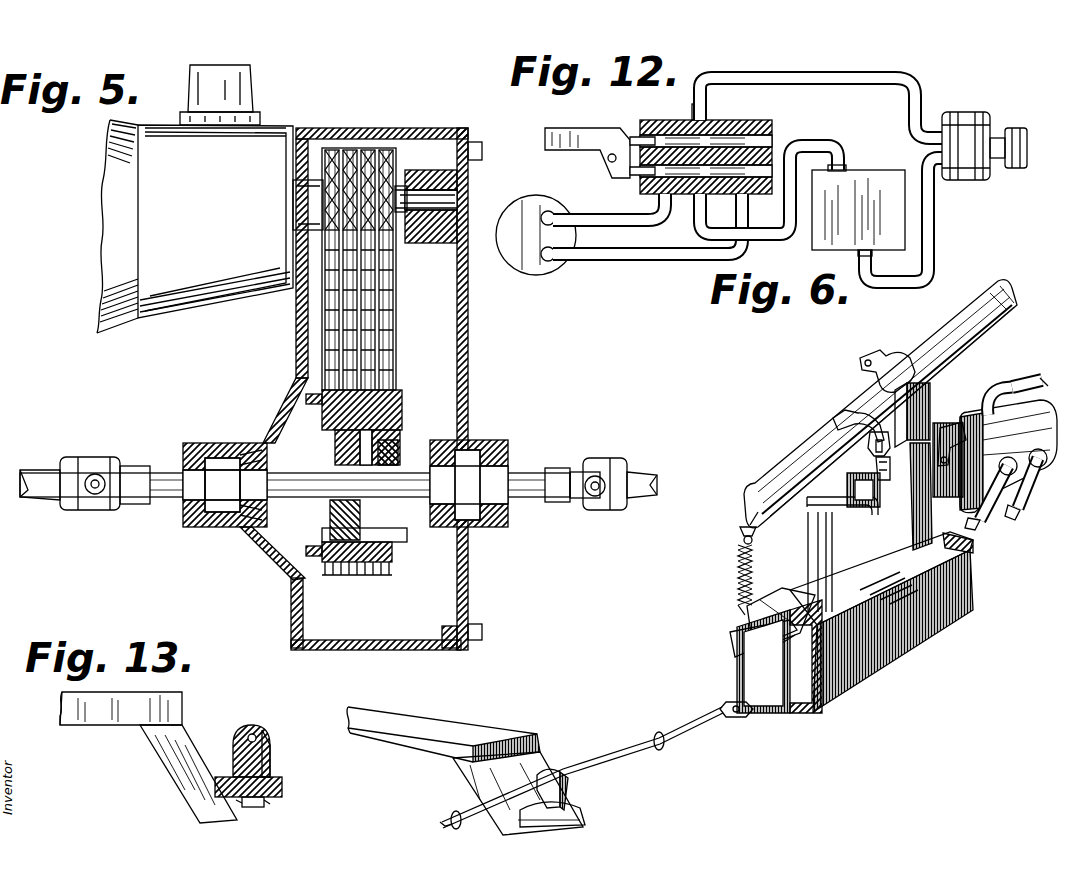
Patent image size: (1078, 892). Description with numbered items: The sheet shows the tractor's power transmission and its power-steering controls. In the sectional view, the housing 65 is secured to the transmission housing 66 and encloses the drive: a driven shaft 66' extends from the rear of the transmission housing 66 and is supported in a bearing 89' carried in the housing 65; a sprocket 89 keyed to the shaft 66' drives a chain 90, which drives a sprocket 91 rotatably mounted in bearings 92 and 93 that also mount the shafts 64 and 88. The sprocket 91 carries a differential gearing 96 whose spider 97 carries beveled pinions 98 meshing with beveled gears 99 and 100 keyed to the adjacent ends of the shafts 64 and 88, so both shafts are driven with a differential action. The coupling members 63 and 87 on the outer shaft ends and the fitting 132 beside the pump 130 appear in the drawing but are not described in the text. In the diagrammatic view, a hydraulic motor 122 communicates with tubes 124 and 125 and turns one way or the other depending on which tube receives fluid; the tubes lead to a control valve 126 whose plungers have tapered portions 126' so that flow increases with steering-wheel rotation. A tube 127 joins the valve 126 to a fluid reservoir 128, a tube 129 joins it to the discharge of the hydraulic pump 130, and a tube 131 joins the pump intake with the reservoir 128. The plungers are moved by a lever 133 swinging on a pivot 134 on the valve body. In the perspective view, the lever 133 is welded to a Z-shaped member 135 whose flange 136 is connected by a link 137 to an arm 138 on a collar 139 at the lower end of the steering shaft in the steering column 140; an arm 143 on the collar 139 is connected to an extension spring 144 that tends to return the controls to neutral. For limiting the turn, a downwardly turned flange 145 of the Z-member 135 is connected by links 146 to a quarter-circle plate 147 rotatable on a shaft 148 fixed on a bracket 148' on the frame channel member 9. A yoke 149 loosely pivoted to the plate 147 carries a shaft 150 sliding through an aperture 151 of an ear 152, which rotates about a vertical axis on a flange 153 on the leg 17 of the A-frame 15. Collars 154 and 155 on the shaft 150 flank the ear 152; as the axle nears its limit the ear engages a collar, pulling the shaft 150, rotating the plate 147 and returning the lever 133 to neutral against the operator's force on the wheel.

In FIG. 6, the channel member 9 is at (890, 655).
In FIG. 6, the A-frame 15 is at (548, 752).
In FIG. 13, the A-frame 15 is at (185, 720).
In FIG. 6, the A-frame leg 17 is at (490, 775).
In FIG. 13, the A-frame leg 17 is at (192, 733).
In FIG. 5, the universal joint 63 is at (90, 468).
In FIG. 5, the shaft 64 is at (160, 475).
In FIG. 5, the housing 65 is at (290, 607).
In FIG. 5, the transmission housing 66 is at (195, 202).
In FIG. 5, the driven shaft 66' is at (375, 167).
In FIG. 5, the universal joint 87 is at (600, 470).
In FIG. 5, the shaft 88 is at (535, 470).
In FIG. 5, the sprocket 89 is at (359, 167).
In FIG. 5, the bearing 89' is at (431, 227).
In FIG. 5, the chain 90 is at (392, 345).
In FIG. 5, the sprocket 91 is at (390, 565).
In FIG. 5, the bearing 92 is at (240, 525).
In FIG. 5, the bearing 93 is at (465, 528).
In FIG. 5, the differential gearing 96 is at (400, 437).
In FIG. 5, the spider 97 is at (400, 450).
In FIG. 5, the beveled pinions 98 is at (390, 425).
In FIG. 5, the beveled gear 99 is at (330, 510).
In FIG. 5, the beveled gear 100 is at (400, 538).
In FIG. 12, the hydraulic motor 122 is at (510, 220).
In FIG. 12, the tube 124 is at (618, 215).
In FIG. 6, the tube 124 is at (995, 522).
In FIG. 12, the tube 125 is at (650, 262).
In FIG. 6, the tube 125 is at (1030, 540).
In FIG. 12, the control valve 126 is at (701, 144).
In FIG. 6, the control valve 126 is at (1008, 426).
In FIG. 12, the tapered portions 126' is at (668, 105).
In FIG. 12, the tube 127 is at (825, 148).
In FIG. 6, the tube 127 is at (1045, 378).
In FIG. 12, the fluid reservoir 128 is at (832, 226).
In FIG. 12, the tube 129 is at (858, 66).
In FIG. 6, the tube 129 is at (884, 356).
In FIG. 12, the hydraulic pump 130 is at (966, 116).
In FIG. 12, the tube 131 is at (930, 244).
In FIG. 12, the coupling 132 is at (1012, 168).
In FIG. 12, the lever 133 is at (572, 135).
In FIG. 6, the lever 133 is at (908, 510).
In FIG. 12, the pivot 134 is at (608, 160).
In FIG. 6, the pivot 134 is at (958, 420).
In FIG. 6, the Z-shaped member 135 is at (852, 510).
In FIG. 6, the flange 136 is at (876, 470).
In FIG. 6, the link 137 is at (870, 444).
In FIG. 6, the arm 138 is at (846, 410).
In FIG. 6, the collar 139 is at (762, 468).
In FIG. 6, the steering column 140 is at (964, 305).
In FIG. 6, the arm 143 is at (740, 516).
In FIG. 6, the extension spring 144 is at (736, 566).
In FIG. 6, the flange 145 is at (812, 508).
In FIG. 6, the links 146 is at (806, 556).
In FIG. 6, the plate 147 is at (745, 683).
In FIG. 6, the shaft 148 is at (748, 616).
In FIG. 6, the bracket 148' is at (730, 638).
In FIG. 6, the yoke 149 is at (733, 716).
In FIG. 6, the shaft 150 is at (592, 760).
In FIG. 13, the shaft 150 is at (268, 738).
In FIG. 6, the aperture 151 is at (550, 775).
In FIG. 13, the aperture 151 is at (254, 732).
In FIG. 6, the ear 152 is at (568, 787).
In FIG. 13, the ear 152 is at (272, 752).
In FIG. 6, the flange 153 is at (585, 815).
In FIG. 13, the flange 153 is at (284, 792).
In FIG. 6, the collar 154 is at (448, 818).
In FIG. 6, the collar 155 is at (660, 734).